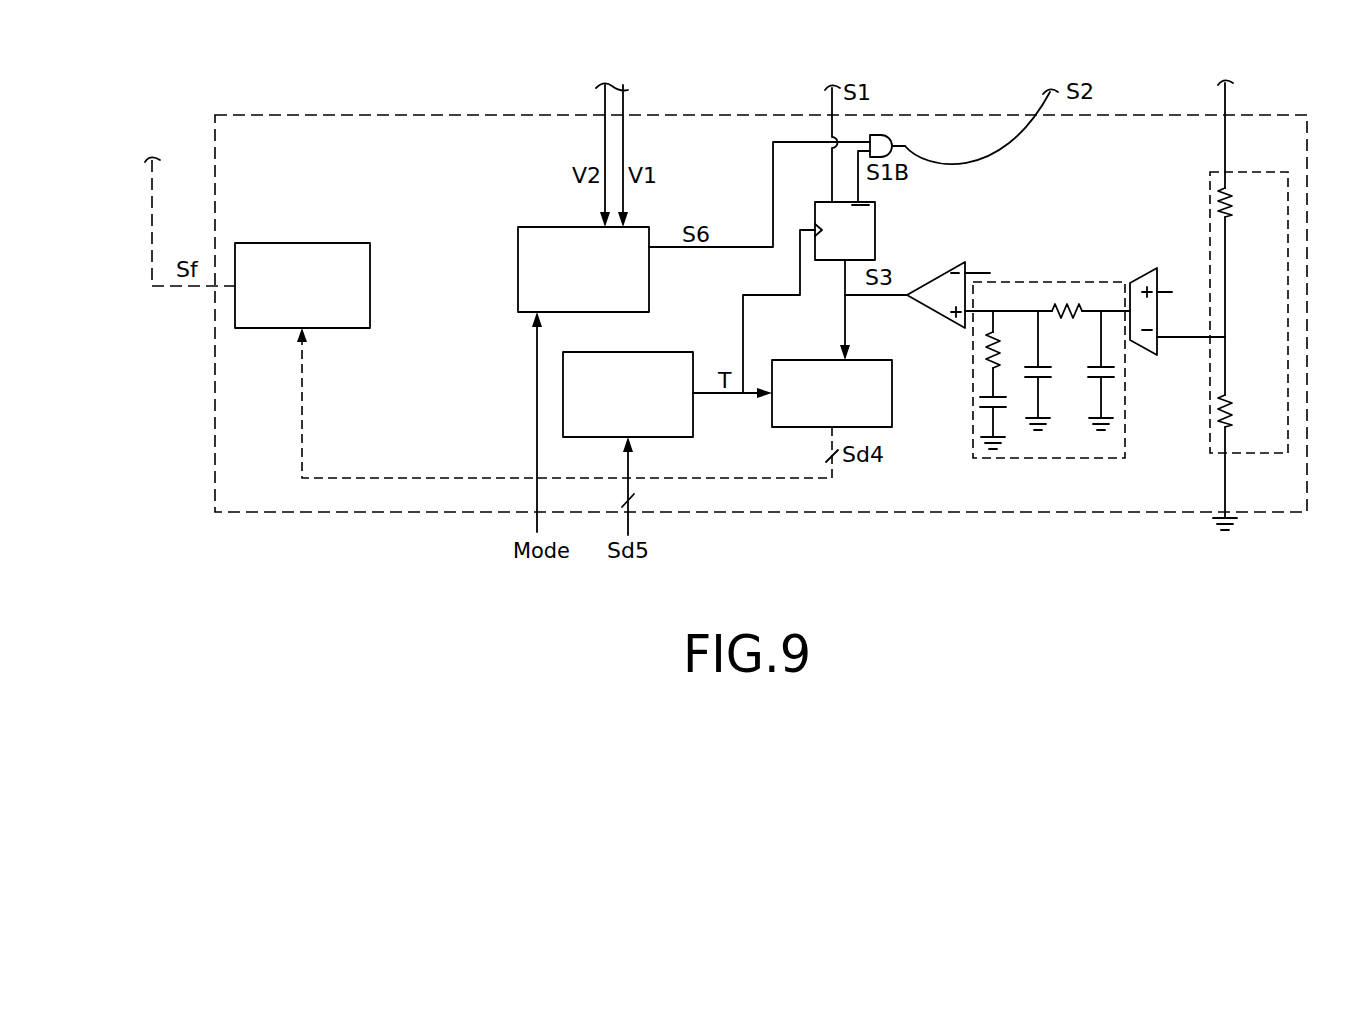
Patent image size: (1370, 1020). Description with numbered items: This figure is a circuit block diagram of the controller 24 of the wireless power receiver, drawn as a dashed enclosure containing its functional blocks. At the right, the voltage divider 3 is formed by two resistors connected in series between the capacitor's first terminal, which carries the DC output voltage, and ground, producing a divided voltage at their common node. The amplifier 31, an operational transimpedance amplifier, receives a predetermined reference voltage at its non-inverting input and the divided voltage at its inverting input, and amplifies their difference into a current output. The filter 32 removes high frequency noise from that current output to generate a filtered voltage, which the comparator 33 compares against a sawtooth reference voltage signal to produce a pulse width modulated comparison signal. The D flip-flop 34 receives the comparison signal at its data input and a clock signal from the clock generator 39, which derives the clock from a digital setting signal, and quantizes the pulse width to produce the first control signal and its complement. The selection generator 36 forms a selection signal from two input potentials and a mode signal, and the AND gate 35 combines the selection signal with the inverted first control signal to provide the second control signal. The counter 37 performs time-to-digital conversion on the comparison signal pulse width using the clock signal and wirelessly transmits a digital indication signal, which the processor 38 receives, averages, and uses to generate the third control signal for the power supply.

The voltage divider 3 is at (1288, 435).
The controller 24 is at (1272, 115).
The amplifier 31 is at (1143, 355).
The filter 32 is at (1072, 280).
The comparator 33 is at (937, 276).
The D flip-flop 34 is at (875, 231).
The AND gate 35 is at (880, 135).
The selection generator 36 is at (520, 227).
The counter 37 is at (892, 400).
The processor 38 is at (290, 243).
The clock generator 39 is at (678, 352).